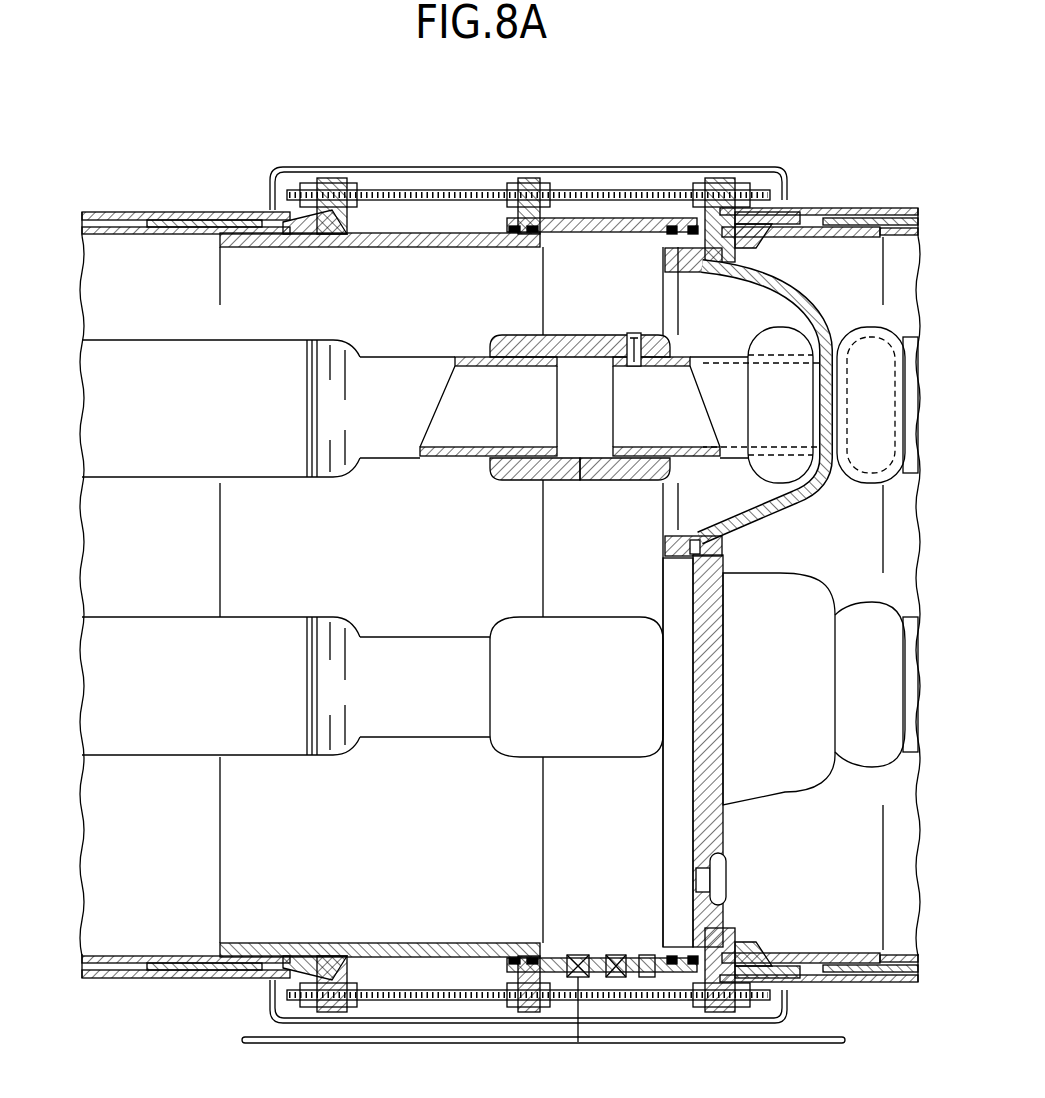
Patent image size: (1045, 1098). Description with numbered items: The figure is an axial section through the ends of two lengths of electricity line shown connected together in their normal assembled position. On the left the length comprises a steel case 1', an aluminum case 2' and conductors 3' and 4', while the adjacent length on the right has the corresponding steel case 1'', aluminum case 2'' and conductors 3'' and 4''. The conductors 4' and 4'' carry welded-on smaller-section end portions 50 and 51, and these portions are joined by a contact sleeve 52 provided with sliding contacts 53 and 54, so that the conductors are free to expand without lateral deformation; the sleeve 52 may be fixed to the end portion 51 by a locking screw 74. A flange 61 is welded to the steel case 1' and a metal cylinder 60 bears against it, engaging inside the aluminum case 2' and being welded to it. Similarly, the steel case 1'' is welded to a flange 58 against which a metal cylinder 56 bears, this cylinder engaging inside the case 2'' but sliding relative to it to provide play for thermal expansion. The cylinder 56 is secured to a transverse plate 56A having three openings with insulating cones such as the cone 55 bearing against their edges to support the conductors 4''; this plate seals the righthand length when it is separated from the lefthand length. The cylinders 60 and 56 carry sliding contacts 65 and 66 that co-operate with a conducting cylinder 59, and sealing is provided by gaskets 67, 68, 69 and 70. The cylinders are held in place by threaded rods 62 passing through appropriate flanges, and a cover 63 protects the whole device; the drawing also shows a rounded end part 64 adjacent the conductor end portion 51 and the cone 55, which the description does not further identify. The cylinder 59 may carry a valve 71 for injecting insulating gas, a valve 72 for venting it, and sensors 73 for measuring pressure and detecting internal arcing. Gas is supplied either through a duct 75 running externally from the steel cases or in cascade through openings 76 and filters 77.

The steel case 1' is at (186, 569).
The steel case 1'' is at (819, 565).
The aluminum case 2' is at (187, 595).
The aluminum case 2'' is at (870, 595).
The conductor 3' is at (372, 714).
The conductor 3'' is at (820, 689).
The conductor 4' is at (221, 385).
The conductor 4'' is at (877, 379).
The smaller-section end portion 50 is at (440, 458).
The smaller-section end portion 51 is at (738, 428).
The contact sleeve 52 is at (540, 336).
The sliding contact 53 is at (530, 480).
The sliding contact 54 is at (650, 480).
The insulating cone 55 is at (826, 482).
The metal cylinder 56 is at (800, 240).
The transverse plate 56A is at (735, 566).
The flange 58 is at (718, 178).
The conducting cylinder 59 is at (612, 236).
The metal cylinder 60 is at (422, 248).
The flange 61 is at (333, 178).
The threaded rod 62 is at (552, 190).
The cover 63 is at (440, 167).
The dome 64 is at (772, 335).
The sliding contact 65 is at (548, 234).
The sliding contact 66 is at (672, 226).
The gasket 67 is at (526, 248).
The gasket 68 is at (692, 226).
The gasket 69 is at (320, 240).
The gasket 70 is at (745, 230).
The valve 71 is at (578, 955).
The valve 72 is at (616, 955).
The sensor 73 is at (646, 955).
The locking screw 74 is at (634, 334).
The duct 75 is at (266, 1037).
The opening 76 is at (702, 885).
The filter 77 is at (722, 886).